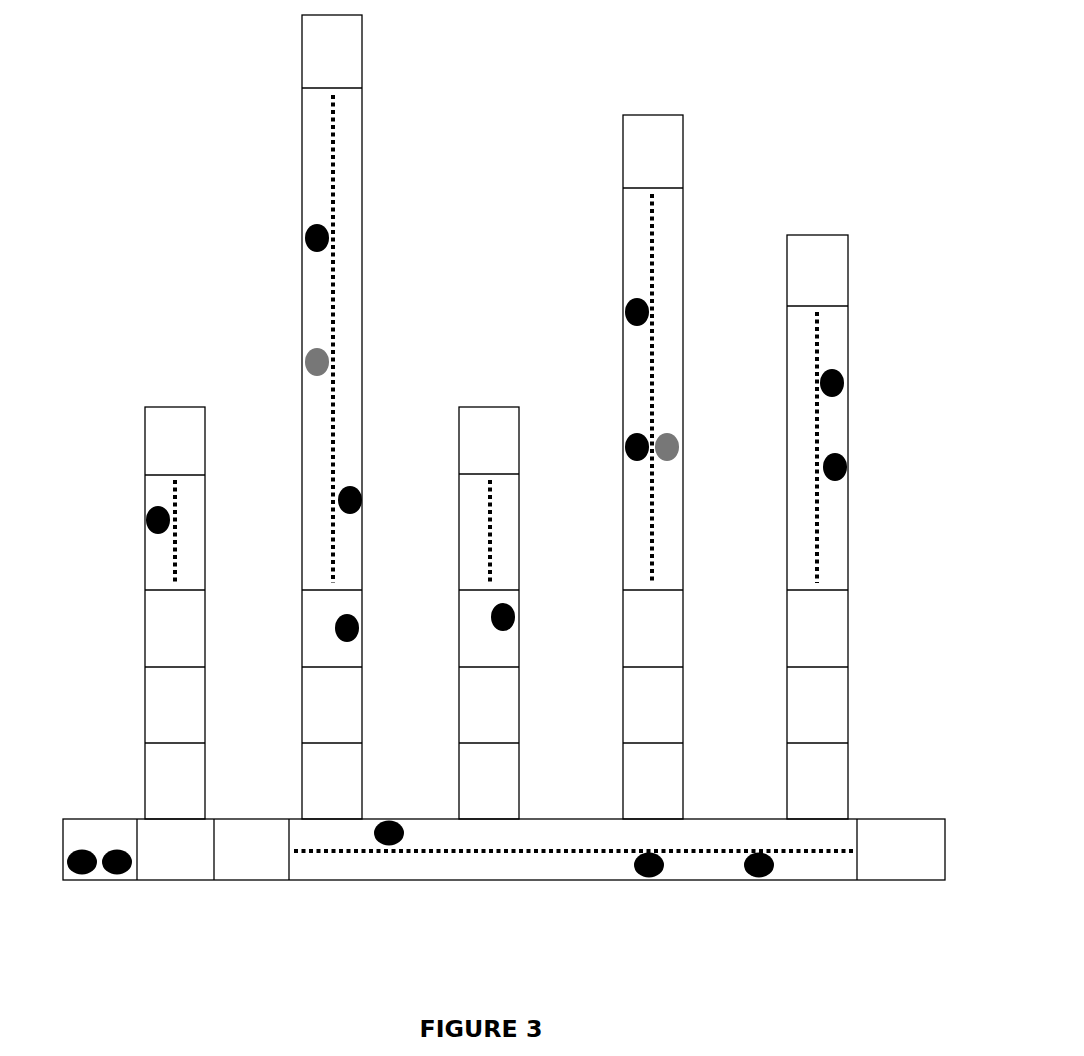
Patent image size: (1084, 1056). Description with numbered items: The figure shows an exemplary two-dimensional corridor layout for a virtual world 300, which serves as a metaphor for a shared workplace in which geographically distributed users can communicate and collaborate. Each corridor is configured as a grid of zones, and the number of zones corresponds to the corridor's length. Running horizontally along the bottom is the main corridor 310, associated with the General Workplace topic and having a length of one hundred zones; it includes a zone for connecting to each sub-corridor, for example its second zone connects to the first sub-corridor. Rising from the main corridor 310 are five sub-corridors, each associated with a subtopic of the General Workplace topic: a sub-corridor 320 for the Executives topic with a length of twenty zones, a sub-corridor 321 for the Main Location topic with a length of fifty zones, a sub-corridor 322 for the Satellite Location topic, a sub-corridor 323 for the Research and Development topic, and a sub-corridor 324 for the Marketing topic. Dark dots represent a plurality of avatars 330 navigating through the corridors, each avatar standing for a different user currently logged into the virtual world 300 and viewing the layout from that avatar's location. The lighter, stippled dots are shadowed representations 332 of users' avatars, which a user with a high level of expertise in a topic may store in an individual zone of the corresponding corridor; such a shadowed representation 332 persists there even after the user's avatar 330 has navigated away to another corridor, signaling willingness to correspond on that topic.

The virtual world 300 is at (184, 79).
The main corridor 310 is at (707, 880).
The sub-corridor 320 is at (143, 423).
The sub-corridor 321 is at (363, 230).
The sub-corridor 322 is at (520, 525).
The sub-corridor 323 is at (622, 225).
The sub-corridor 324 is at (848, 425).
The avatars 330 is at (307, 232).
The shadowed representation 332 is at (307, 362).